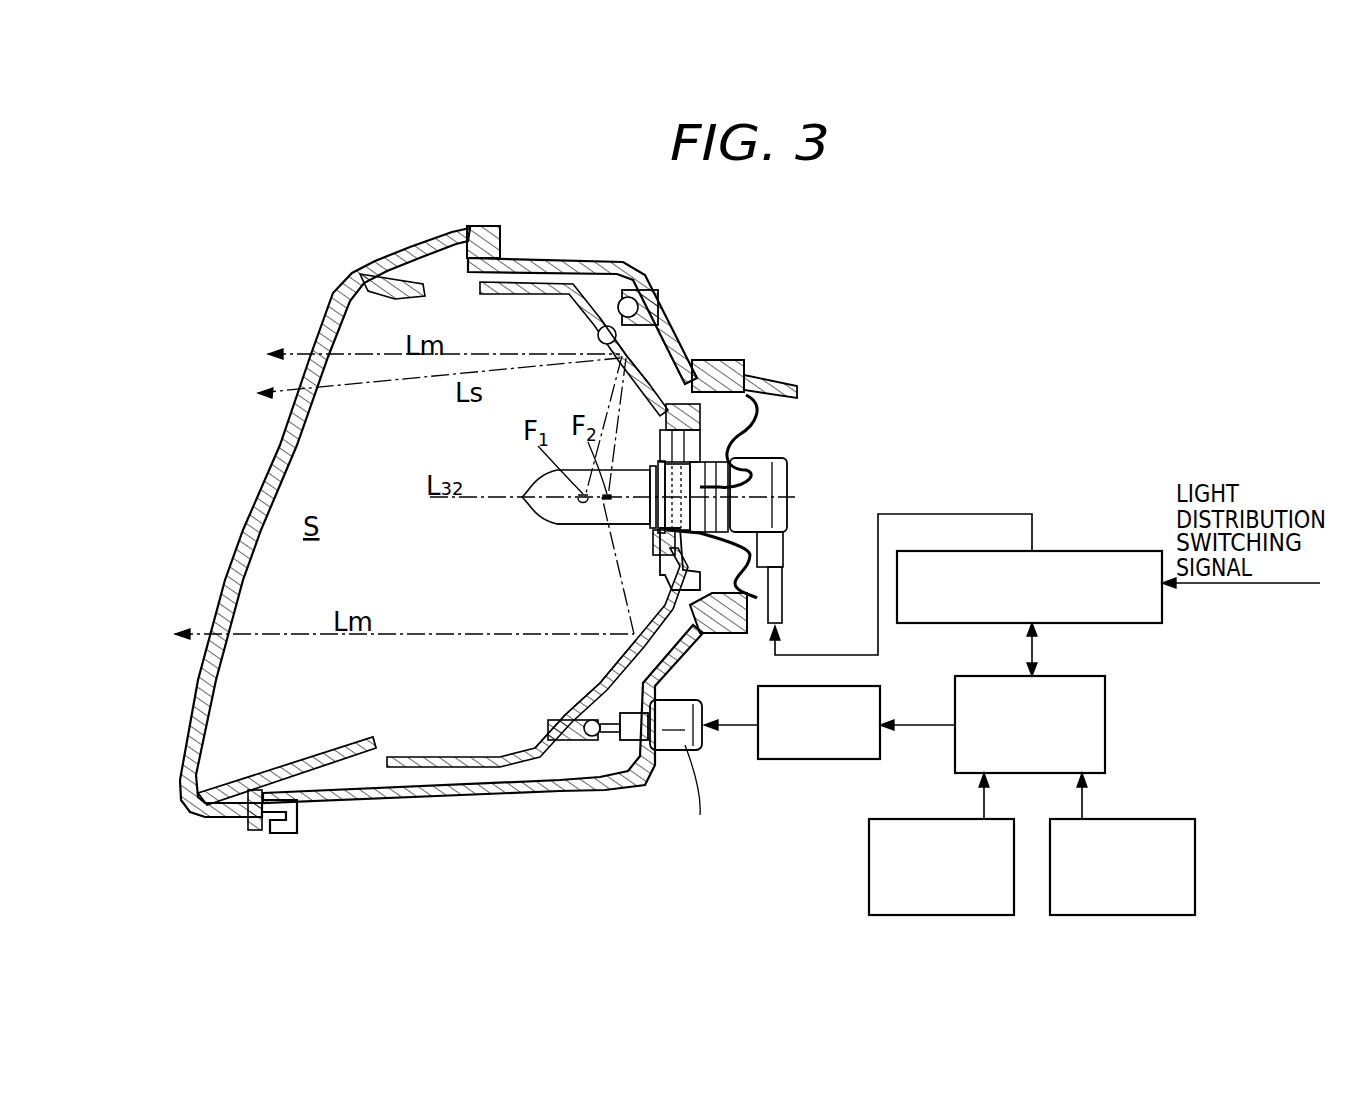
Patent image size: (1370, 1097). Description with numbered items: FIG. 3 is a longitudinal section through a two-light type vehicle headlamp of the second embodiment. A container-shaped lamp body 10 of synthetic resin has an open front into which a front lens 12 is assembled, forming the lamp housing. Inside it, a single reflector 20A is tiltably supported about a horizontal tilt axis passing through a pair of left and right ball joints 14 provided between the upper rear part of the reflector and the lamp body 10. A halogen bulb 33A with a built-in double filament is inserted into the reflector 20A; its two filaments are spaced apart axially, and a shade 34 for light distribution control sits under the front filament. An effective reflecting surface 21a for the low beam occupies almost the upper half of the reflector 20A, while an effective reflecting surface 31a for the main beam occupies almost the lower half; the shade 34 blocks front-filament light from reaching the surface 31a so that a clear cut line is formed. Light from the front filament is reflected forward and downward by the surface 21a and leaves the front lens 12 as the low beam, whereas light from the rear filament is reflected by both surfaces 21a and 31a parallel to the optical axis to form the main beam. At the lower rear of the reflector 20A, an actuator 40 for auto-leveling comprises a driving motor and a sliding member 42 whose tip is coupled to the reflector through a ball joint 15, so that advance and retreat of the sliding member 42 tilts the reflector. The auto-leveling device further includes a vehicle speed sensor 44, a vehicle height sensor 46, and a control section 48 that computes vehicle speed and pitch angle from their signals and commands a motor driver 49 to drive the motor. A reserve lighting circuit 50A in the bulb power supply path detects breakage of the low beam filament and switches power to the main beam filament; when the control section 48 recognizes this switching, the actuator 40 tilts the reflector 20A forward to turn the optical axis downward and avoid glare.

The lamp body 10 is at (577, 260).
The front lens 12 is at (262, 478).
The ball joint 14 is at (640, 303).
The ball joint 15 is at (590, 738).
The reflector 20A is at (660, 360).
The effective reflecting surface for low beam 21a is at (655, 315).
The effective reflecting surface for main beam 31a is at (572, 690).
The halogen bulb 33A is at (587, 540).
The shade for light distribution control 34 is at (583, 503).
The actuator 40 is at (635, 796).
The sliding member 42 is at (619, 785).
The vehicle speed sensor 44 is at (1195, 848).
The vehicle height sensor 46 is at (869, 885).
The control section 48 is at (1105, 715).
The motor driver 49 is at (795, 762).
The reserve lighting circuit 50A is at (1092, 551).